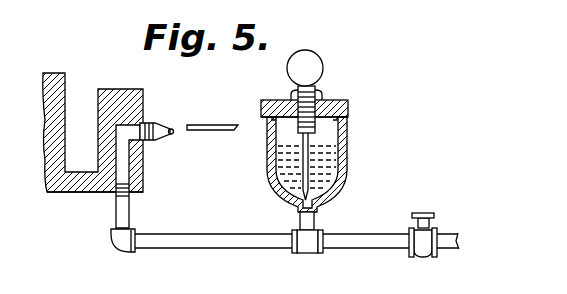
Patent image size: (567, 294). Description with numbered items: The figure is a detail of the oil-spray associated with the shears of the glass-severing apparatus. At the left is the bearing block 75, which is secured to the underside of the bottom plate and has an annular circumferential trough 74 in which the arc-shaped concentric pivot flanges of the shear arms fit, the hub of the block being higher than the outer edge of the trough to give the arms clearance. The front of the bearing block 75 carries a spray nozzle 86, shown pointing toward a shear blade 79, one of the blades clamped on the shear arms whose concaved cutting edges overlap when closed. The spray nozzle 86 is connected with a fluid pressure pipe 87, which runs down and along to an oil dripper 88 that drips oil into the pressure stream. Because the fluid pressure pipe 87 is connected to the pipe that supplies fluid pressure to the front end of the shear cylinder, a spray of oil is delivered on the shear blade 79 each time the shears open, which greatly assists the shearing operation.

The annular circumferential trough 74 is at (77, 172).
The bearing block 75 is at (77, 193).
The shear blade 79 is at (203, 124).
The spray nozzle 86 is at (152, 139).
The fluid pressure pipe 87 is at (131, 208).
The oil dripper 88 is at (277, 178).